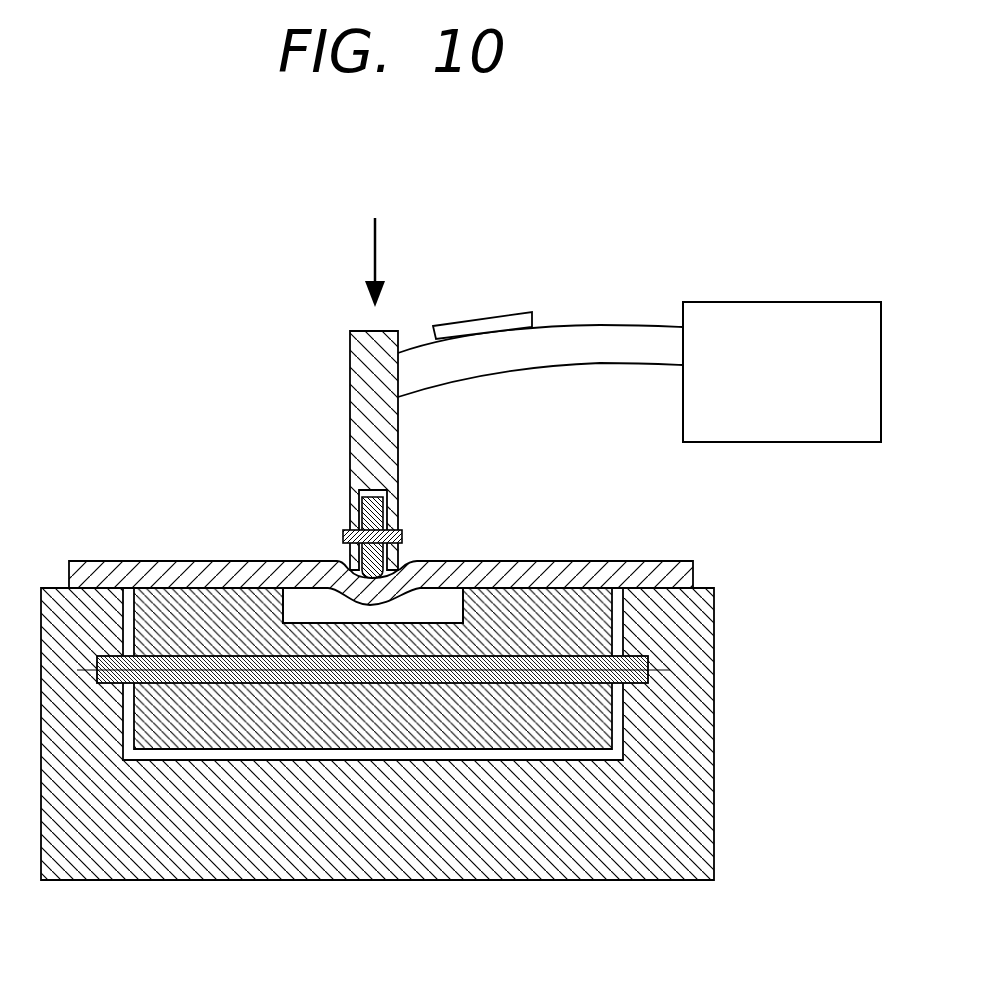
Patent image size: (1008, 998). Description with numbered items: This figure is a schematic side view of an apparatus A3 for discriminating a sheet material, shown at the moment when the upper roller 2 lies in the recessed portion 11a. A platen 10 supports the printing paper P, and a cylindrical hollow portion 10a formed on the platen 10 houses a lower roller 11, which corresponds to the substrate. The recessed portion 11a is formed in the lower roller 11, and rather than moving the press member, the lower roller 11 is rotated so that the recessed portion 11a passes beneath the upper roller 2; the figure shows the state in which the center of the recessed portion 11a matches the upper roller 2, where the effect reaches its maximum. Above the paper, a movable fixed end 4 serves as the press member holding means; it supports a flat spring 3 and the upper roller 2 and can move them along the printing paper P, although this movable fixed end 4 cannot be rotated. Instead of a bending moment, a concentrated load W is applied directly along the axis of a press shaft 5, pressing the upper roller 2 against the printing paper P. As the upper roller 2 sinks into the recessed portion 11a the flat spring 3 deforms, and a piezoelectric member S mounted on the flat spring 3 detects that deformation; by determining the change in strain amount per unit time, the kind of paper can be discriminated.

The platen 10 is at (690, 811).
The cylindrical hollow portion 10a is at (485, 753).
The lower roller 11 is at (595, 730).
The recessed portion 11a is at (452, 611).
The printing paper P is at (118, 558).
The press shaft 5 is at (356, 360).
The upper roller 2 is at (390, 512).
The flat spring 3 is at (617, 325).
The movable fixed end 4 is at (812, 302).
The piezoelectric member S is at (487, 313).
The load W is at (375, 243).
The apparatus A3 is at (758, 187).